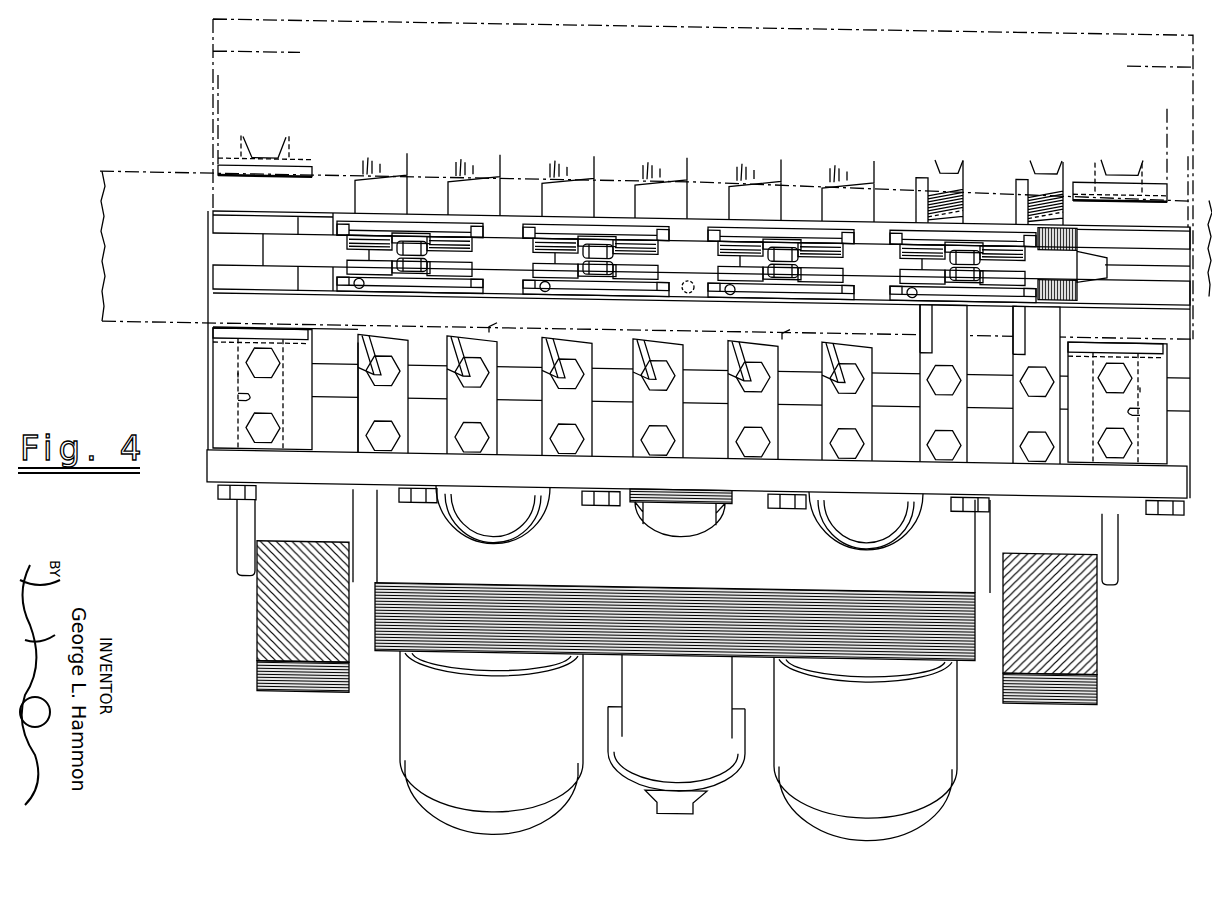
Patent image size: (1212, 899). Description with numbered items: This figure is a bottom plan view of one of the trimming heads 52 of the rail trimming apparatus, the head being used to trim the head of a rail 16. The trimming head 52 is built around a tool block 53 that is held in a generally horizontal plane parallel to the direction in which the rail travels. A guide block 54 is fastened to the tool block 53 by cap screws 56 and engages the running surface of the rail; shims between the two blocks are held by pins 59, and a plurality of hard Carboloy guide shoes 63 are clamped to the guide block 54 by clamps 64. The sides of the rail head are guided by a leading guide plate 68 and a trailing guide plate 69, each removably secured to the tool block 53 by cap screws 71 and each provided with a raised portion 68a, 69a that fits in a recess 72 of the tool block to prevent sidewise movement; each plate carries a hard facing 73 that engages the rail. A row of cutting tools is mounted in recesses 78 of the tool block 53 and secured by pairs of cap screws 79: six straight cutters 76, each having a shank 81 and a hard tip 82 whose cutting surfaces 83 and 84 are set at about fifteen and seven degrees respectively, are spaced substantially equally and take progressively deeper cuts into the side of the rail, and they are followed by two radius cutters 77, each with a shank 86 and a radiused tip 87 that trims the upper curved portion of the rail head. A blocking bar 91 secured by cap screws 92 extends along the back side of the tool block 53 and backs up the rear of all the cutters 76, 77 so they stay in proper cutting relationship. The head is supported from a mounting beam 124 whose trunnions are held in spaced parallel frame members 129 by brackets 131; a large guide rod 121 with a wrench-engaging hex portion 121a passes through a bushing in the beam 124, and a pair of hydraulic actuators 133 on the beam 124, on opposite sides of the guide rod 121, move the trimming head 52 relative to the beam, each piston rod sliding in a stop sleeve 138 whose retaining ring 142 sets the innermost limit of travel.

The rail 16 is at (112, 172).
The trimming head 52 is at (188, 488).
The tool block 53 is at (205, 150).
The guide block 54 is at (1100, 260).
The cap screws 56 is at (604, 240).
The pins 59 is at (689, 286).
The guide shoes 63 is at (732, 280).
The clamps 64 is at (910, 272).
The leading guide plate 68 is at (262, 389).
The raised portion 68a is at (238, 380).
The trailing guide plate 69 is at (1117, 450).
The raised portion 69a is at (1140, 378).
The cap screws 71 is at (692, 296).
The recesses 72 is at (238, 406).
The facing 73 is at (262, 178).
The straight cutters 76 is at (409, 157).
The radius cutters 77 is at (966, 172).
The recesses 78 is at (491, 312).
The cap screws 79 is at (383, 428).
The shank 81 is at (357, 418).
The tip 82 is at (357, 345).
The cutting surface 83 is at (451, 333).
The cutting surface 84 is at (566, 333).
The shank 86 is at (965, 165).
The tip 87 is at (922, 196).
The blocking bar 91 is at (812, 467).
The cap screws 92 is at (232, 500).
The guide rod 121 is at (671, 515).
The hex portion 121a is at (698, 803).
The mounting beam 124 is at (679, 560).
The frame members 129 is at (304, 645).
The brackets 131 is at (275, 690).
The hydraulic actuators 133 is at (480, 739).
The stop sleeve 138 is at (490, 520).
The retaining ring 142 is at (482, 499).